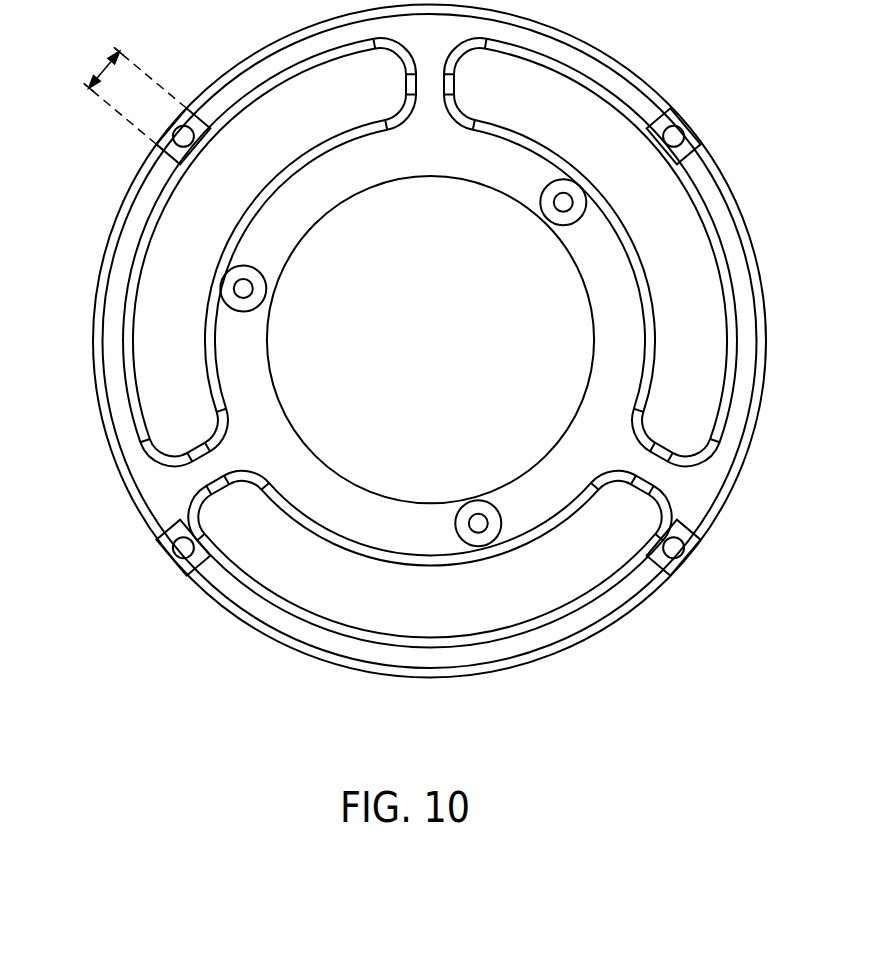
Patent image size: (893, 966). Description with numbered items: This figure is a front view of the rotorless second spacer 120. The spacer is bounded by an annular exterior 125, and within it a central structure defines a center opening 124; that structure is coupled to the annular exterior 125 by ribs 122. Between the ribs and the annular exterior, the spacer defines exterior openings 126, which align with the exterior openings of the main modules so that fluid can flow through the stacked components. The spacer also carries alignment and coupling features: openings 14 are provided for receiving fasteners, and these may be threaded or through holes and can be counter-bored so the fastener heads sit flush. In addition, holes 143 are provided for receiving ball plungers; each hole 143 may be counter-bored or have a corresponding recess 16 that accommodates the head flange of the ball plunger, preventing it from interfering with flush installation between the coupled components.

The second spacer 120 is at (396, 371).
The annular exterior 125 is at (433, 677).
The exterior opening 126 is at (340, 578).
The ribs 122 is at (192, 478).
The center opening 124 is at (375, 270).
The openings 14 is at (480, 525).
The holes 143 is at (179, 139).
The recess 16 is at (110, 57).